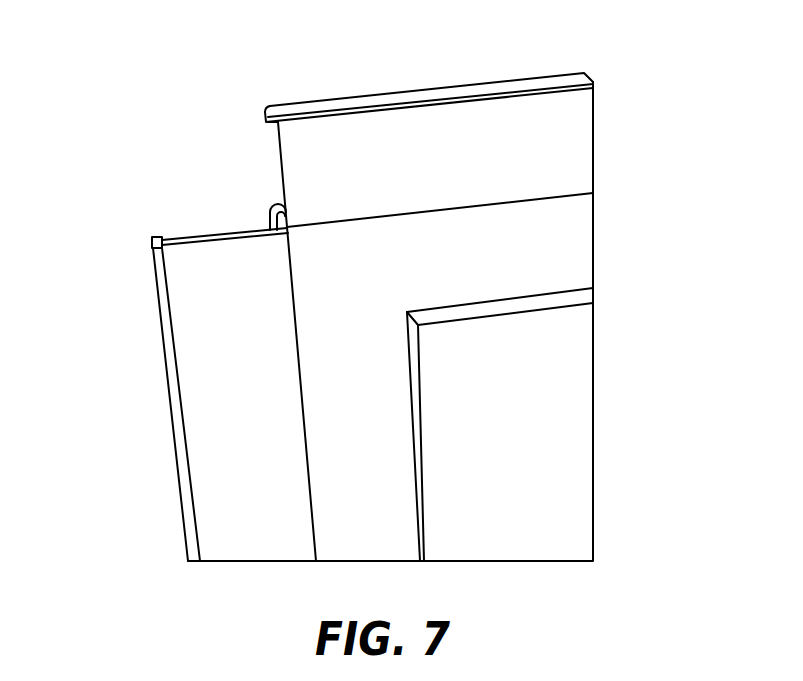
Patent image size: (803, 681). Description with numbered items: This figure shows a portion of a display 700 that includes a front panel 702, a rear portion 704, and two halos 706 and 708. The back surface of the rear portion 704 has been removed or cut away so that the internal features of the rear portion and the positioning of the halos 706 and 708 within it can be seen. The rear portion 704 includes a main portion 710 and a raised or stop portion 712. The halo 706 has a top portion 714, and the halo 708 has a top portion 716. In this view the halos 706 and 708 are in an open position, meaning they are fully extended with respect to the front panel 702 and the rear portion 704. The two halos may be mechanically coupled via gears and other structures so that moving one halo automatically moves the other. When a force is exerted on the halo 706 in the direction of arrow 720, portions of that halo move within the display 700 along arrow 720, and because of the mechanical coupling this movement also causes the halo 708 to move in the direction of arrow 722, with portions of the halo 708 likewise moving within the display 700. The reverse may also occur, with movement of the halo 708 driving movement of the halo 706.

The display 700 is at (625, 610).
The front panel 702 is at (270, 207).
The rear portion 704 is at (595, 333).
The halo 706 is at (207, 438).
The halo 708 is at (563, 159).
The main portion 710 is at (580, 234).
The raised or stop portion 712 is at (565, 485).
The top portion 714 is at (170, 362).
The top portion 716 is at (595, 81).
The arrow 720 is at (132, 468).
The arrow 722 is at (452, 67).